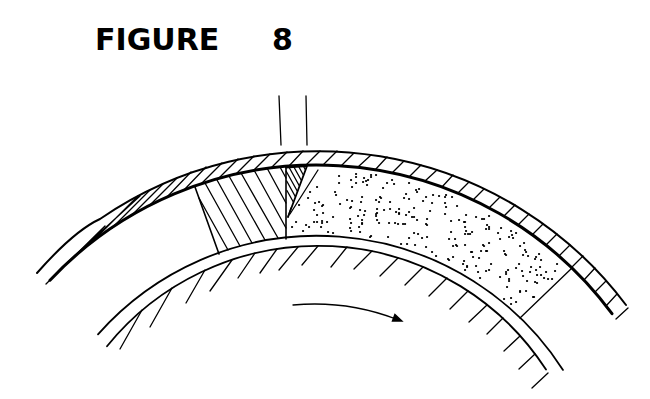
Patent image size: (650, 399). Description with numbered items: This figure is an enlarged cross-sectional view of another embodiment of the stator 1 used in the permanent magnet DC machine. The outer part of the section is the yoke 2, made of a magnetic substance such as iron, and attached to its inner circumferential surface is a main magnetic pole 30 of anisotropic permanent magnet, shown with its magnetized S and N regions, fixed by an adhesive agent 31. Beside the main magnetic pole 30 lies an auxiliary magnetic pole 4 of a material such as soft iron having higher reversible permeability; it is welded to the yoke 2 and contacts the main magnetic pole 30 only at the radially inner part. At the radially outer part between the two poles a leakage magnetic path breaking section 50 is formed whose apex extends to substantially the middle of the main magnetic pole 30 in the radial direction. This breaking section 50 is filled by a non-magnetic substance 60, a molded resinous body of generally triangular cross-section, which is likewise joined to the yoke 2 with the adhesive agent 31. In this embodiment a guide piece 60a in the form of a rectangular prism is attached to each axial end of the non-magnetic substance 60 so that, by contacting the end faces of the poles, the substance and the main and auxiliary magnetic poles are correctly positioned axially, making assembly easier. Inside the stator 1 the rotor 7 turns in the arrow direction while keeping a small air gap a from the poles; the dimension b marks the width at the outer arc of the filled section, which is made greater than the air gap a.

The stator 1 is at (415, 160).
The yoke 2 is at (500, 196).
The auxiliary magnetic pole 4 is at (220, 202).
The rotor 7 is at (505, 345).
The main magnetic pole 30 is at (438, 208).
The adhesive agent 31 is at (524, 210).
The leakage magnetic path breaking section 50 is at (273, 177).
The non-magnetic substance 60 is at (306, 168).
The guide piece 60a is at (289, 203).
The air gap a is at (189, 291).
The pole tip width b is at (316, 113).